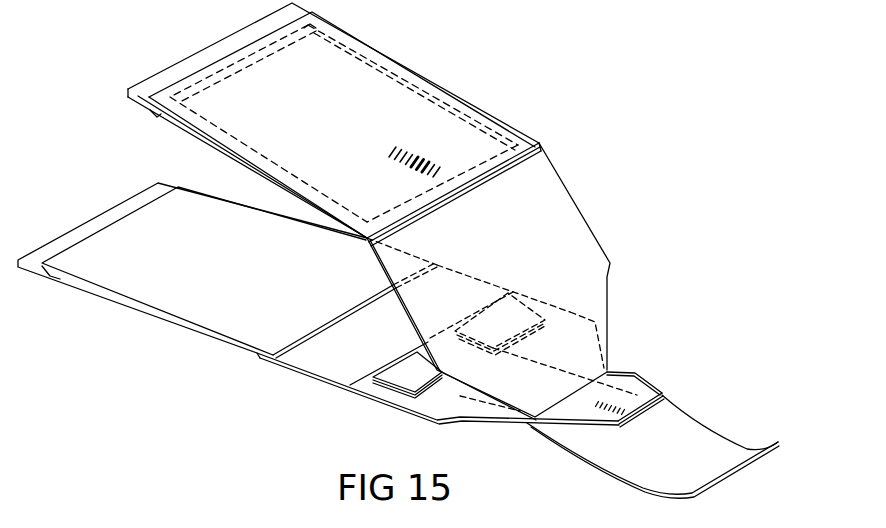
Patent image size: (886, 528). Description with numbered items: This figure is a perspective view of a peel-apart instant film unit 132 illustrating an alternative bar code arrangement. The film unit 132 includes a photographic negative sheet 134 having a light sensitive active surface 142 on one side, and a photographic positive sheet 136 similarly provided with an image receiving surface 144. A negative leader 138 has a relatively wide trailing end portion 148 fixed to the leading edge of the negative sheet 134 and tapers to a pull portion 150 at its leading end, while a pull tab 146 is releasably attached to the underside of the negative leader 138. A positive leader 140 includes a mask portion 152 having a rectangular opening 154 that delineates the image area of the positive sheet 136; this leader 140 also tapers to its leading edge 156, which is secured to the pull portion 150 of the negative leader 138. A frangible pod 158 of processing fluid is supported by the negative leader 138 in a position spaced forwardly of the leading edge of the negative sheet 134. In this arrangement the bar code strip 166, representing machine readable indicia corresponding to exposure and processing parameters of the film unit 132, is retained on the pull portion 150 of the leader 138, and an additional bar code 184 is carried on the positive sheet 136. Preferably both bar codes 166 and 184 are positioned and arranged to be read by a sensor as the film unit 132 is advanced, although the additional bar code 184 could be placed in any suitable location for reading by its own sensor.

The peel-apart film unit 132 is at (480, 69).
The photographic negative sheet 134 is at (130, 310).
The photographic positive sheet 136 is at (495, 105).
The negative leader 138 is at (310, 389).
The positive leader 140 is at (615, 277).
The active surface 142 is at (208, 314).
The image receiving surface 144 is at (360, 69).
The pull tab 146 is at (711, 433).
The trailing end portion 148 is at (320, 356).
The pull portion 150 is at (647, 392).
The mask portion 152 is at (210, 147).
The rectangular opening 154 is at (320, 62).
The leading edge 156 is at (617, 375).
The frangible pod 158 is at (411, 375).
The bar code strip 166 is at (592, 396).
The additional bar code 184 is at (417, 157).